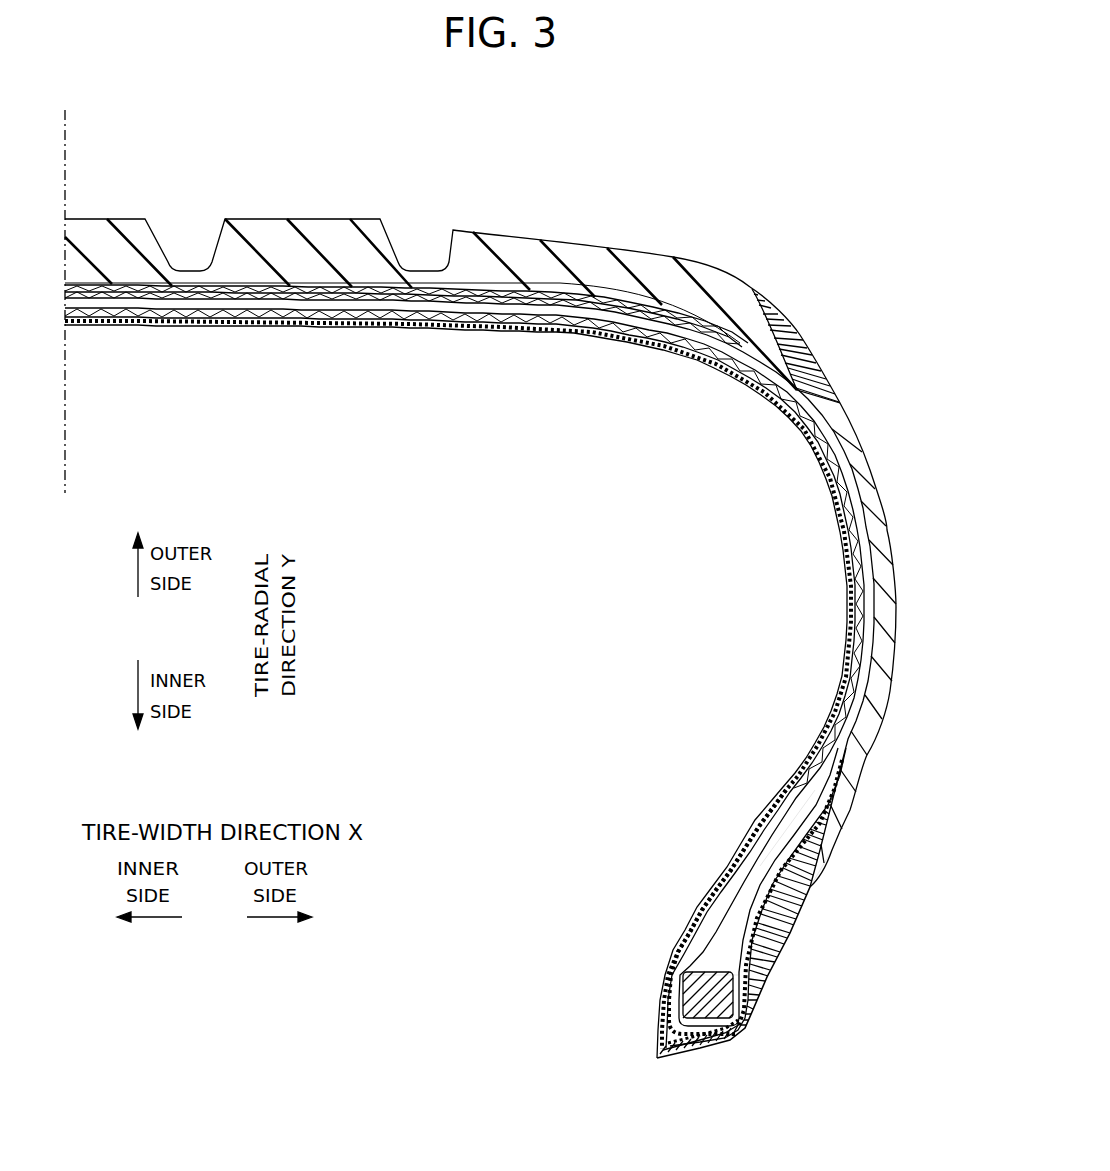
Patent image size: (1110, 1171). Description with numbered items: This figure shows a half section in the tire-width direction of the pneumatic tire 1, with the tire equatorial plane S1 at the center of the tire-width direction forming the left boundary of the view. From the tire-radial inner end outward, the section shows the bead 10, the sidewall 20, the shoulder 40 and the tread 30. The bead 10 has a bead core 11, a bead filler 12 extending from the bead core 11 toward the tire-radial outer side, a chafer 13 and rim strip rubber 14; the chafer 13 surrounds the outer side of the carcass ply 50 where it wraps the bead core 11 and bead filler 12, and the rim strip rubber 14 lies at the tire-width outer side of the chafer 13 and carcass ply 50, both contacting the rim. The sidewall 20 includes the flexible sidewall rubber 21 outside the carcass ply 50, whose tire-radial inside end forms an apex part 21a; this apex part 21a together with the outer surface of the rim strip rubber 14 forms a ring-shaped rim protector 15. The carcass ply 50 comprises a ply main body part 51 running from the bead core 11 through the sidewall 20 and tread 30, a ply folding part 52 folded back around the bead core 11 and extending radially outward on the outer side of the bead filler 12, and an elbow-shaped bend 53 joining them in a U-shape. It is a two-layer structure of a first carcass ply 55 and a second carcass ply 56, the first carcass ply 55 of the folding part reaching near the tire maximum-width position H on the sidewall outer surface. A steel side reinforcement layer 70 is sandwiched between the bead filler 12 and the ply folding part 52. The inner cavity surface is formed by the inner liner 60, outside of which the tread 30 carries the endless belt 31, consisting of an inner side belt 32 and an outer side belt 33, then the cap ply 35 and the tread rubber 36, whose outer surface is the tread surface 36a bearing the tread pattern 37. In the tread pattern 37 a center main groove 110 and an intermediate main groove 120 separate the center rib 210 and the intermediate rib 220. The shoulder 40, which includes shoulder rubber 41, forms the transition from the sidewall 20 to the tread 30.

The tire 1 is at (596, 127).
The tire equatorial plane S1 is at (68, 124).
The bead 10 is at (760, 936).
The bead core 11 is at (710, 998).
The bead filler 12 is at (710, 952).
The chafer 13 is at (682, 1052).
The rim strip rubber 14 is at (778, 902).
The rim protector 15 is at (821, 897).
The sidewall 20 is at (854, 587).
The sidewall rubber 21 is at (862, 478).
The apex part 21a is at (813, 888).
The tread 30 is at (283, 213).
The belt 31 is at (406, 390).
The inner side belt 32 is at (317, 305).
The outer side belt 33 is at (350, 305).
The cap ply 35 is at (332, 288).
The tread rubber 36 is at (253, 237).
The tread surface 36a is at (337, 221).
The tread pattern 37 is at (455, 223).
The shoulder 40 is at (802, 335).
The shoulder rubber 41 is at (817, 383).
The carcass ply 50 is at (496, 673).
The ply main body part 51 is at (862, 607).
The ply folding part 52 is at (857, 747).
The elbow-shaped bend 53 is at (710, 1037).
The first carcass ply 55 is at (843, 545).
The second carcass ply 56 is at (862, 572).
The inner liner 60 is at (830, 716).
The side reinforcement layer 70 is at (753, 873).
The center main groove 110 is at (172, 268).
The intermediate main groove 120 is at (405, 268).
The center rib 210 is at (100, 219).
The intermediate rib 220 is at (322, 217).
The tire maximum-width position H is at (898, 627).